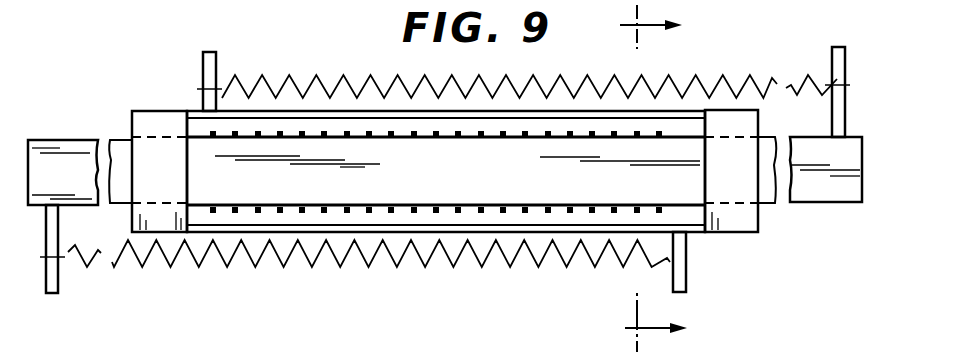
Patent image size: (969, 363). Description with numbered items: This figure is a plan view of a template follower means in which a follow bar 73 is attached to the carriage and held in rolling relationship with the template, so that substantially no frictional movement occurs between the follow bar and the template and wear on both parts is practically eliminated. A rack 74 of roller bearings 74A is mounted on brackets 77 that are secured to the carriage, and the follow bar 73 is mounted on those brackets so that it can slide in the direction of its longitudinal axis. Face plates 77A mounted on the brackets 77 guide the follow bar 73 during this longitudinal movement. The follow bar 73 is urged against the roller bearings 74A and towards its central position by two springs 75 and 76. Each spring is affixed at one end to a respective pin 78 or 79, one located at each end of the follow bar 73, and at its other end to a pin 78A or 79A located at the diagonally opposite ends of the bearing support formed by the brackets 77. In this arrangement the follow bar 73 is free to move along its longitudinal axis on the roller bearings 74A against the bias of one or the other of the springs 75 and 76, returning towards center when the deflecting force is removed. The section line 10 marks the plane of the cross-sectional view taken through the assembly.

The section line 10 is at (669, 178).
The follow bar 73 is at (511, 175).
The rack 74 is at (193, 136).
The roller bearings 74A is at (395, 131).
The spring 75 is at (563, 84).
The spring 76 is at (367, 257).
The brackets 77 is at (195, 112).
The face plates 77A is at (186, 176).
The pin 78 is at (56, 232).
The pin 78A is at (686, 277).
The pin 79 is at (838, 117).
The pin 79A is at (210, 75).